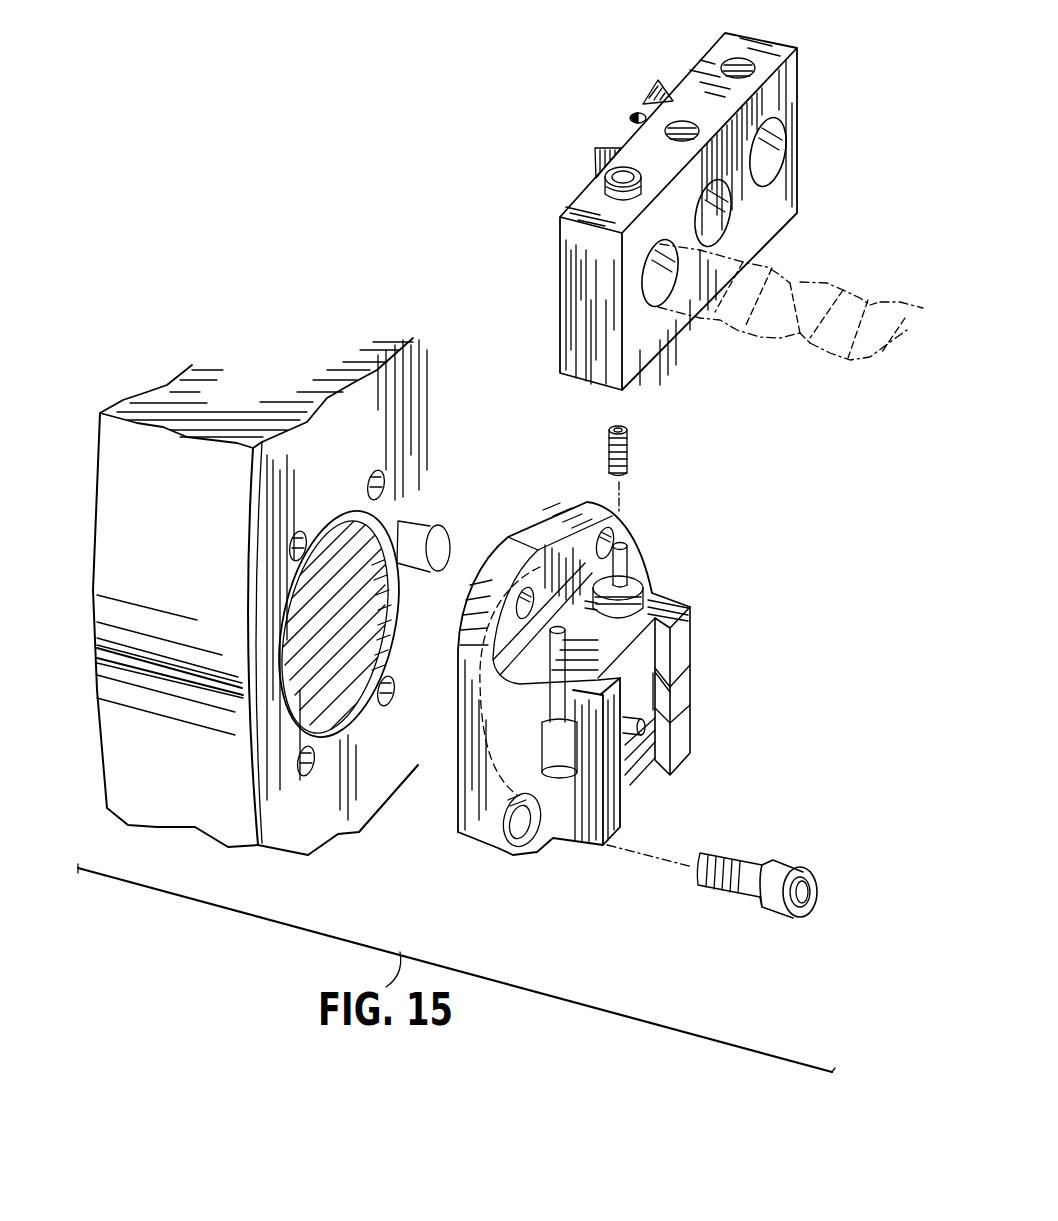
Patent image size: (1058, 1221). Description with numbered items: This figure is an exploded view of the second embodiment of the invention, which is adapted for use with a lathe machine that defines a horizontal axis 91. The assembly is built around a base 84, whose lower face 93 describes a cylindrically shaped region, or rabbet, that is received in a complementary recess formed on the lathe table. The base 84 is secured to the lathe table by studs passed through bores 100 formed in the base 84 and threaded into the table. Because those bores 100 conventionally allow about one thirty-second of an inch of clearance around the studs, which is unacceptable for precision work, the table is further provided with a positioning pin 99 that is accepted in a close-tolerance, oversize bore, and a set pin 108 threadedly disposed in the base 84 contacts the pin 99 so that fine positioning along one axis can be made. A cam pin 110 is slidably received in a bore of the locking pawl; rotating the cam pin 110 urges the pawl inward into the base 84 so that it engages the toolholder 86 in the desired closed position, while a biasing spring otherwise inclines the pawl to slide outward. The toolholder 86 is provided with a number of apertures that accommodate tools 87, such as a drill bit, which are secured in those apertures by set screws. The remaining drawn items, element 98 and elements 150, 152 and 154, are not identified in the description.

The base 84 is at (688, 600).
The toolholder 86 is at (572, 208).
The tools 87 is at (820, 285).
The horizontal axis 91 is at (646, 731).
The lower face 93 is at (384, 472).
The socket head cap screw 98 is at (787, 862).
The positioning pin 99 is at (440, 527).
The bores 100 is at (647, 578).
The set pin 108 is at (628, 452).
The cam pin 110 is at (560, 778).
The triangular key 150 is at (656, 90).
The small port 152 is at (636, 113).
The threaded port 154 is at (742, 60).